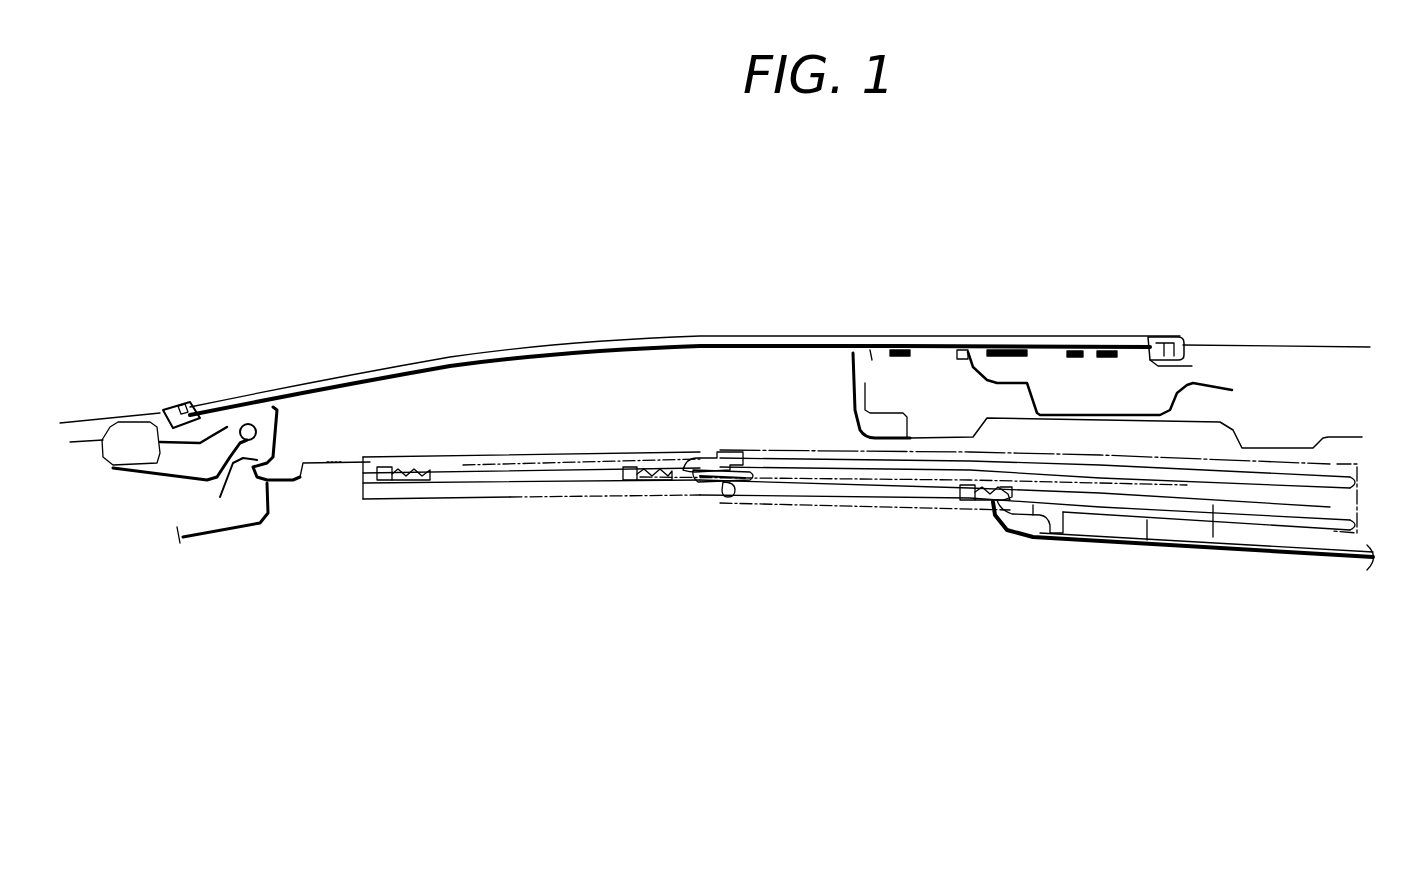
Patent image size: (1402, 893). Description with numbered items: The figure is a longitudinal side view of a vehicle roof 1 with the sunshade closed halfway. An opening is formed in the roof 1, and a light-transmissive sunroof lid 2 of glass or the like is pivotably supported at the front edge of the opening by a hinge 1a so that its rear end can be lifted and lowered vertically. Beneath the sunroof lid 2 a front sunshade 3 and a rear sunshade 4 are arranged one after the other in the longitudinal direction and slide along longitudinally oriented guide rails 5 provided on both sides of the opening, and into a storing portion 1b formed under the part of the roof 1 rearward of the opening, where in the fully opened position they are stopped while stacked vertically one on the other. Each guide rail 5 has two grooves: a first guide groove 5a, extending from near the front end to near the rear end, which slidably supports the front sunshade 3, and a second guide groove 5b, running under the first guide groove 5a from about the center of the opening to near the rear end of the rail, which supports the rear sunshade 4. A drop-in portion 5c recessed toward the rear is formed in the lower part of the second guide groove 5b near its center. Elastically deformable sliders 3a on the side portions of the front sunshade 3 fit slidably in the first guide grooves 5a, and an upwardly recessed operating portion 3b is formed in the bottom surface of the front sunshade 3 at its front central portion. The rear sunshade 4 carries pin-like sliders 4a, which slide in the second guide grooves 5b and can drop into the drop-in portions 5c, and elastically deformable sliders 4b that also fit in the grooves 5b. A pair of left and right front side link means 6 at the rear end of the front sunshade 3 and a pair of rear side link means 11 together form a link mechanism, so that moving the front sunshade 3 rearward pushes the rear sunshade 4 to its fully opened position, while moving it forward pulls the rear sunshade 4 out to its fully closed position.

The roof 1 is at (1203, 343).
The hinge 1a is at (240, 405).
The storing portion 1b is at (1293, 537).
The sunroof lid 2 is at (580, 338).
The front sunshade 3 is at (453, 477).
The elastically deformable sliders 3a is at (388, 482).
The operating portion 3b is at (322, 465).
The rear sunshade 4 is at (807, 483).
The pin-like sliders 4a is at (730, 498).
The elastically deformable sliders 4b is at (972, 500).
The guide rails 5 is at (1147, 553).
The first guide groove 5a is at (568, 462).
The second guide groove 5b is at (1213, 545).
The drop-in portion 5c is at (1047, 520).
The front side link means 6 is at (723, 447).
The rear side link means 11 is at (718, 482).